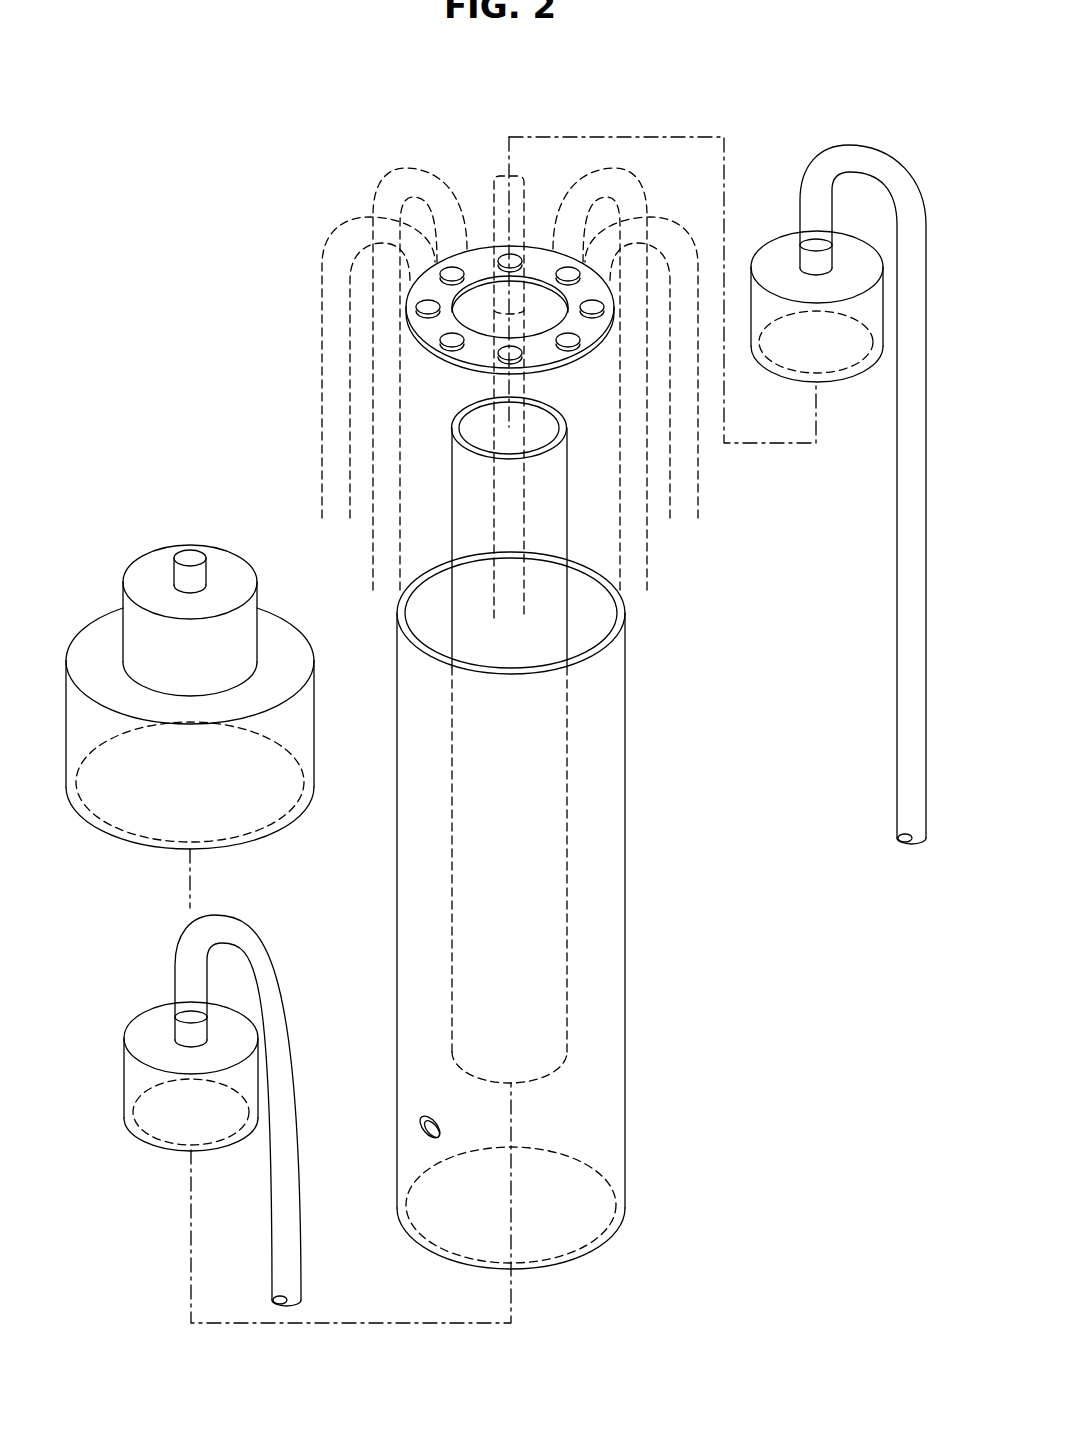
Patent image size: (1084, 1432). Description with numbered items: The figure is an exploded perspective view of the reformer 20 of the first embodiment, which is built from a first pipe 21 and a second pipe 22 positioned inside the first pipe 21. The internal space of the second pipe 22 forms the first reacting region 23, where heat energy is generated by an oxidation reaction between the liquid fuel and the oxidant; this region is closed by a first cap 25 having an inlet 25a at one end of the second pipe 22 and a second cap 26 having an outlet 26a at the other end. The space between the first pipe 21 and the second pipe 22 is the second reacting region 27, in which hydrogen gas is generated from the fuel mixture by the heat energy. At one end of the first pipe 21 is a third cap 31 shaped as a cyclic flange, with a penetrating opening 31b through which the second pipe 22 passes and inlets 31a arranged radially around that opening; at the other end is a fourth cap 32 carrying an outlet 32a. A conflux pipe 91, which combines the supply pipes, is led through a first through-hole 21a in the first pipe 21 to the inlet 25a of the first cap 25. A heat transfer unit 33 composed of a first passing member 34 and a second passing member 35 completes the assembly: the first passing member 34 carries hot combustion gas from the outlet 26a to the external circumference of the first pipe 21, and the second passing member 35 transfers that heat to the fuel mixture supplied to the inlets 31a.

The reformer 20 is at (860, 106).
The first pipe 21 is at (625, 1089).
The first through-hole 21a is at (418, 1127).
The second pipe 22 is at (566, 914).
The first reacting region 23 is at (576, 960).
The first cap 25 is at (136, 1085).
The inlet 25a is at (176, 1032).
The second cap 26 is at (773, 253).
The outlet 26a is at (807, 262).
The second reacting region 27 is at (632, 1027).
The third cap 31 is at (437, 323).
The inlets 31a is at (566, 344).
The penetrating opening 31b is at (490, 290).
The fourth cap 32 is at (300, 722).
The outlet 32a is at (200, 578).
The heat transfer unit 33 is at (750, 703).
The first passing member 34 is at (907, 520).
The second passing member 35 is at (649, 530).
The conflux pipe 91 is at (290, 1240).